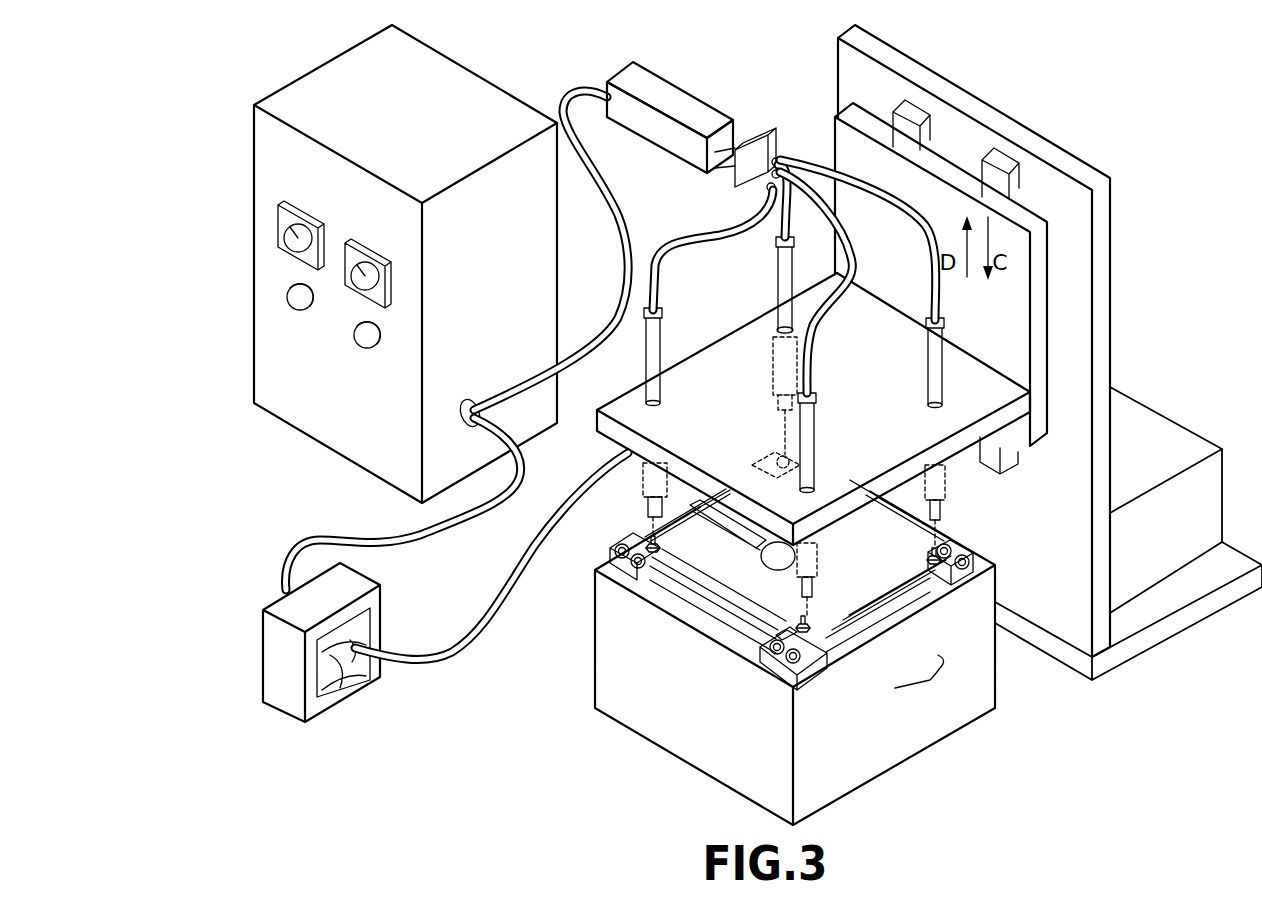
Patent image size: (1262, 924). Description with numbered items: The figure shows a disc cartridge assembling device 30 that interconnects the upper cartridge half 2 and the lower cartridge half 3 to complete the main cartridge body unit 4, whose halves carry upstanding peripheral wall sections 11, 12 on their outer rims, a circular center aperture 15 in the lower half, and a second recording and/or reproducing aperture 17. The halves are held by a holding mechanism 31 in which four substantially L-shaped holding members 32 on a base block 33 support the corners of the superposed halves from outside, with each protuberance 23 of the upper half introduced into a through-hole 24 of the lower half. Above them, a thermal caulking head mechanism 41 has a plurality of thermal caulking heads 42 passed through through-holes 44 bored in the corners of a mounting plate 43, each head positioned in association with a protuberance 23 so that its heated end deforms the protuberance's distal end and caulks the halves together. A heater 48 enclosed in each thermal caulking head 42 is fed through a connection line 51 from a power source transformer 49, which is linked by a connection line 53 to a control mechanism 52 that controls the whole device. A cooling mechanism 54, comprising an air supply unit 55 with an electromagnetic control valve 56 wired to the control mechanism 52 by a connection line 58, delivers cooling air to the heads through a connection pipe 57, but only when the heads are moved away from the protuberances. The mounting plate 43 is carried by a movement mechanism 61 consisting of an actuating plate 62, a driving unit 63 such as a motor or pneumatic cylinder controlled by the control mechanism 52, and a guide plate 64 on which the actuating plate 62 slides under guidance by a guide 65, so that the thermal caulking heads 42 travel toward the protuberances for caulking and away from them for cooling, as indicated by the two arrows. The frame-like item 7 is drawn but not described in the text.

The upper cartridge half 2 is at (866, 612).
The lower cartridge half 3 is at (900, 600).
The main cartridge body unit 4 is at (933, 709).
The frame 7 is at (719, 581).
The peripheral wall section 11 is at (710, 613).
The peripheral wall section 12 is at (746, 616).
The center aperture 15 is at (775, 570).
The second recording and/or reproducing aperture 17 is at (748, 538).
The protuberance 23 is at (660, 546).
The through-hole 24 is at (660, 570).
The disc cartridge assembling device 30 is at (1130, 120).
The holding mechanism 31 is at (592, 683).
The holding member 32 is at (612, 576).
The base block 33 is at (885, 766).
The thermal caulking head mechanism 41 is at (765, 318).
The thermal caulking head 42 is at (770, 345).
The mounting plate 43 is at (963, 366).
The through-hole 44 is at (794, 330).
The heater 48 is at (800, 357).
The power source transformer 49 is at (322, 705).
The connection line 51 is at (478, 625).
The control mechanism 52 is at (277, 405).
The connection line 53 is at (378, 545).
The cooling mechanism 54 is at (693, 108).
The air supply unit 55 is at (643, 82).
The control valve 56 is at (770, 138).
The connection pipe 57 is at (805, 182).
The connection line 58 is at (600, 178).
The movement mechanism 61 is at (1105, 300).
The actuating plate 62 is at (1040, 415).
The driving unit 63 is at (1178, 432).
The guide plate 64 is at (945, 78).
The guide 65 is at (1000, 160).